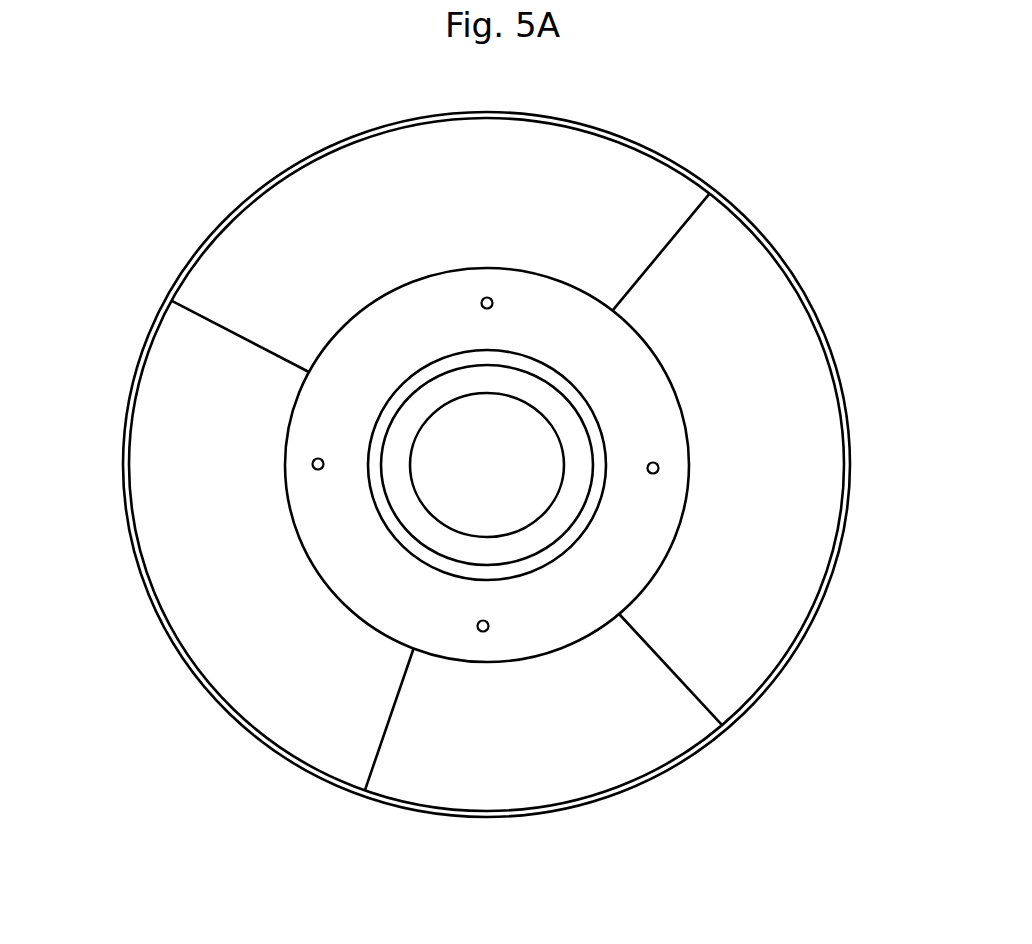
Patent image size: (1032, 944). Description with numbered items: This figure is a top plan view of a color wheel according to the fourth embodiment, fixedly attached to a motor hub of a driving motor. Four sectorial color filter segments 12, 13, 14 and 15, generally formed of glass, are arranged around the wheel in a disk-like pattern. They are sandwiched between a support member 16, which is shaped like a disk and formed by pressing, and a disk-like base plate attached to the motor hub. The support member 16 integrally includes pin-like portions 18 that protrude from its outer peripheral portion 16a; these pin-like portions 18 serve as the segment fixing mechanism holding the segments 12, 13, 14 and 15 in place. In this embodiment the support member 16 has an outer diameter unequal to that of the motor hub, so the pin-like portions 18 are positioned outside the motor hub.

The color filter segment 12 is at (133, 377).
The color filter segment 13 is at (612, 137).
The color filter segment 14 is at (823, 326).
The color filter segment 15 is at (628, 784).
The support member 16 is at (669, 371).
The outer peripheral portion 16a is at (658, 425).
The pin-like portions 18 is at (488, 297).